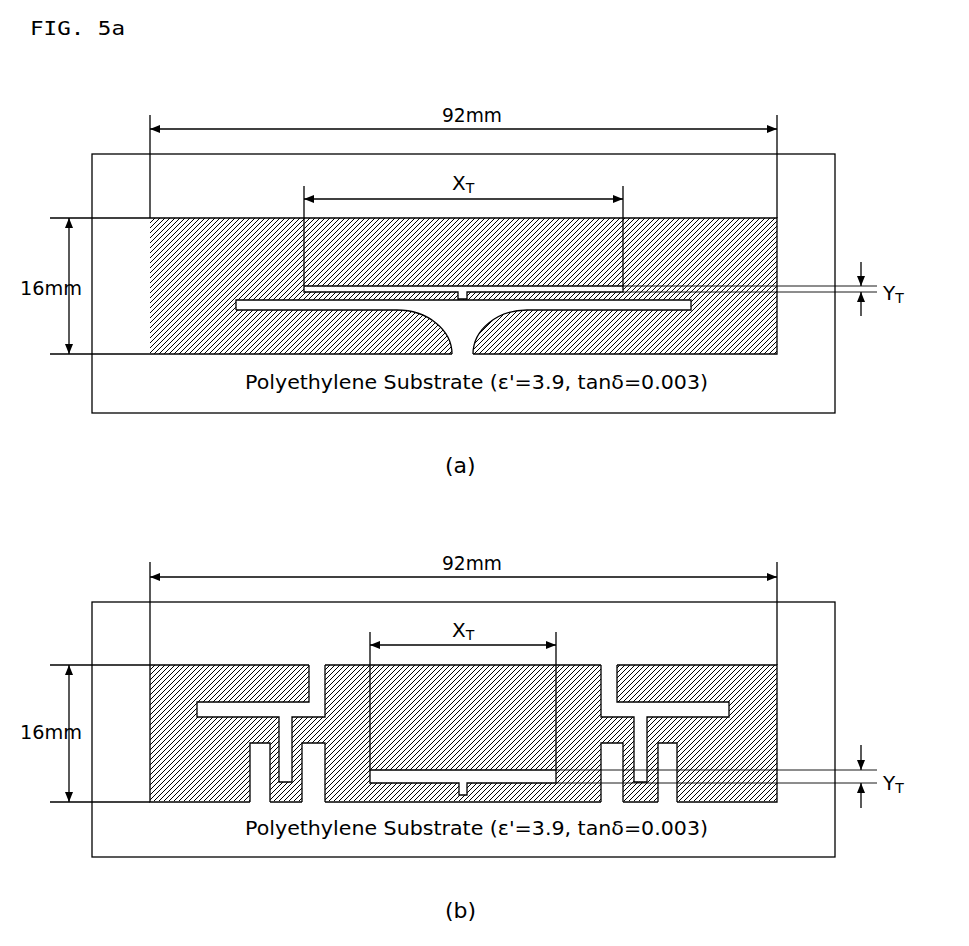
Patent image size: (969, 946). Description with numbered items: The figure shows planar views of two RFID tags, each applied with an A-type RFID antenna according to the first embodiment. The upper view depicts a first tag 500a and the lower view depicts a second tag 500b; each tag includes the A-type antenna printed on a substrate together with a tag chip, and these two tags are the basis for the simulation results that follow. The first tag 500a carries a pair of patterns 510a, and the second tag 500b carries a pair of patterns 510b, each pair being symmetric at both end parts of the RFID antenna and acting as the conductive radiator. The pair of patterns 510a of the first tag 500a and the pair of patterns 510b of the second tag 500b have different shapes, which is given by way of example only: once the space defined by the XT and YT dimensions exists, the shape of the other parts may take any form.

The first tag 500a is at (816, 154).
The pair of patterns 510a is at (776, 230).
The second tag 500b is at (813, 602).
The pair of patterns 510b is at (777, 690).